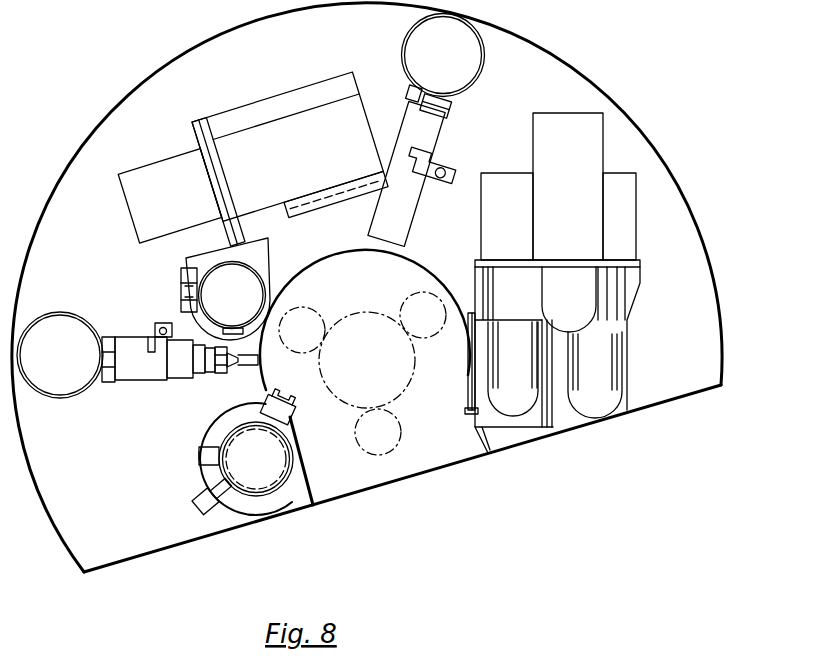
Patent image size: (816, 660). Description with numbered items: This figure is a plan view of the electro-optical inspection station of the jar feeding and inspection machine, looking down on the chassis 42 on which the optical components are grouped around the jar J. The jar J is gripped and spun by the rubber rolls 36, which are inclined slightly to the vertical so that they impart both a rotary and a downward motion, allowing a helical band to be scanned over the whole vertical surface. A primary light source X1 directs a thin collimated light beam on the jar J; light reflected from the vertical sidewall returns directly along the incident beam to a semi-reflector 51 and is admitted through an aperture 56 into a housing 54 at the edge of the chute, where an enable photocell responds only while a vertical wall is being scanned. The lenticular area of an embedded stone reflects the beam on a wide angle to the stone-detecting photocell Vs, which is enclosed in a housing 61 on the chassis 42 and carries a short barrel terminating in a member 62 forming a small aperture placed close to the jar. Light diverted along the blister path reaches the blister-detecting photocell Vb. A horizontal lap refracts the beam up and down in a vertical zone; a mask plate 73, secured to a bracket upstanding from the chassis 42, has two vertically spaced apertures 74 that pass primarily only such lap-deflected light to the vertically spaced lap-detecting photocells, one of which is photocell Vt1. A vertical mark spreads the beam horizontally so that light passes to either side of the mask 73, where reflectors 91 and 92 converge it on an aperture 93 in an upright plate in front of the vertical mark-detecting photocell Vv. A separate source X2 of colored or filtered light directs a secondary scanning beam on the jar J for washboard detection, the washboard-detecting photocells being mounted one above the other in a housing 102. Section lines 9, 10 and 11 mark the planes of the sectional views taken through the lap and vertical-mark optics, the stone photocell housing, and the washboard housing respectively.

The chassis 42 is at (72, 544).
The section line 11— 11 is at (262, 44).
The jar J is at (410, 375).
The rubber rolls 36 is at (380, 455).
The housing 102 is at (250, 172).
The secondary light source X2 is at (468, 70).
The section line 9— 9 is at (496, 107).
The housing 54 is at (225, 289).
The aperture 56 is at (240, 330).
The primary light source X1 is at (145, 372).
The semi-reflector 51 is at (226, 374).
The housing 61 is at (265, 516).
The stone-detecting photocell Vs is at (290, 487).
The aperture member 62 is at (292, 412).
The section line 10— 10 is at (288, 381).
The aperture 93 is at (570, 427).
The reflector 91 is at (548, 427).
The blister-detecting photocell Vb is at (569, 299).
The lap-detecting photocell Vt1 is at (513, 369).
The reflector 92 is at (548, 340).
The vertical mark-detecting photocell Vv is at (610, 378).
The apertures 74 is at (470, 366).
The mask plate 73 is at (470, 398).